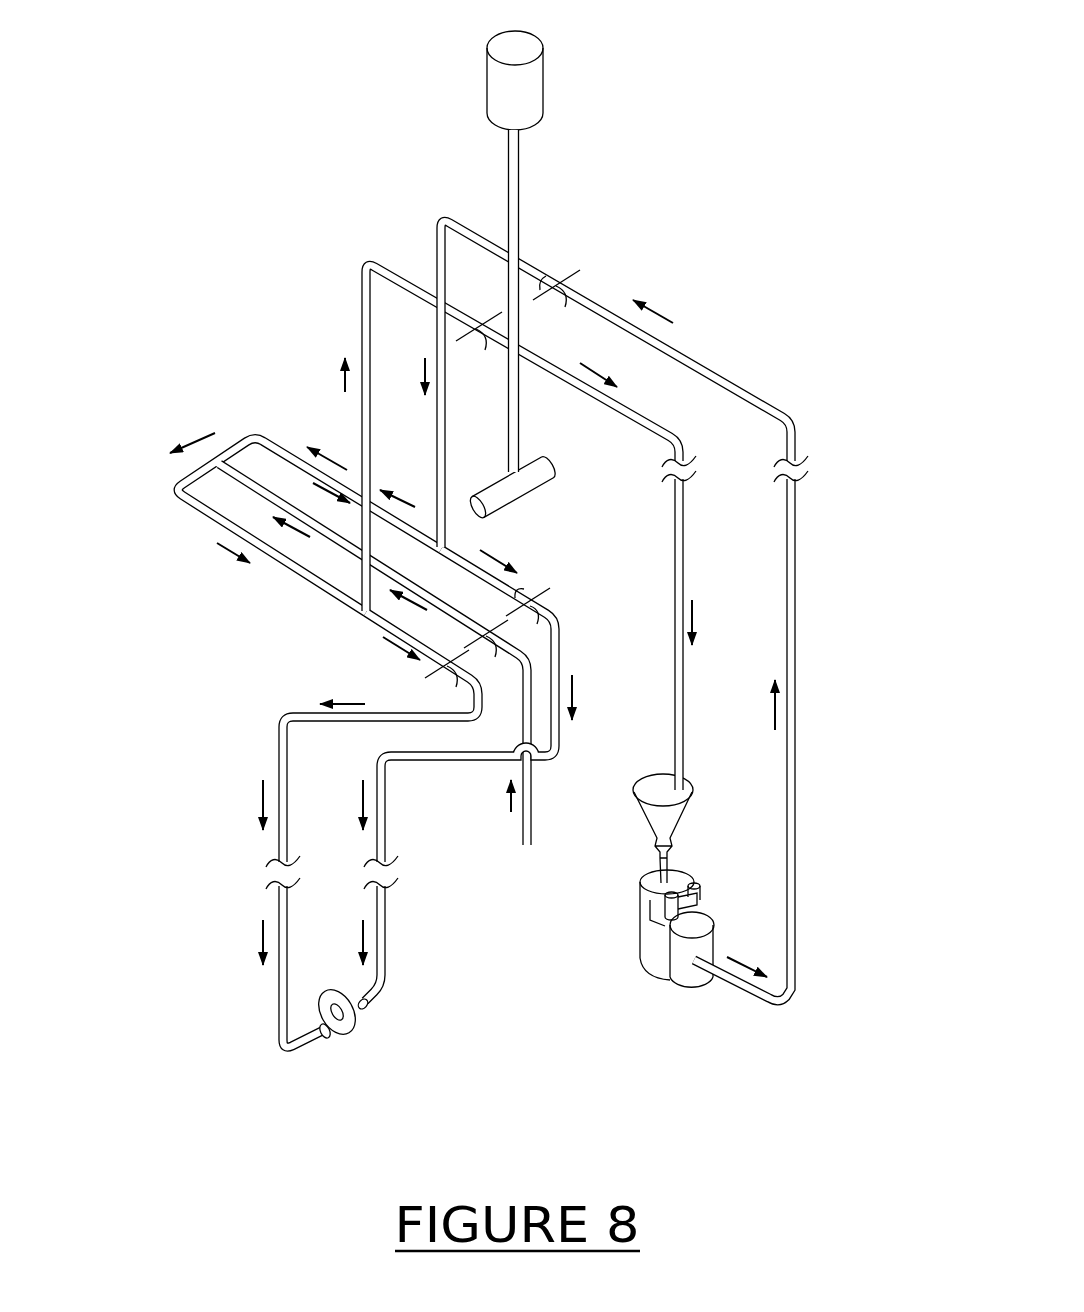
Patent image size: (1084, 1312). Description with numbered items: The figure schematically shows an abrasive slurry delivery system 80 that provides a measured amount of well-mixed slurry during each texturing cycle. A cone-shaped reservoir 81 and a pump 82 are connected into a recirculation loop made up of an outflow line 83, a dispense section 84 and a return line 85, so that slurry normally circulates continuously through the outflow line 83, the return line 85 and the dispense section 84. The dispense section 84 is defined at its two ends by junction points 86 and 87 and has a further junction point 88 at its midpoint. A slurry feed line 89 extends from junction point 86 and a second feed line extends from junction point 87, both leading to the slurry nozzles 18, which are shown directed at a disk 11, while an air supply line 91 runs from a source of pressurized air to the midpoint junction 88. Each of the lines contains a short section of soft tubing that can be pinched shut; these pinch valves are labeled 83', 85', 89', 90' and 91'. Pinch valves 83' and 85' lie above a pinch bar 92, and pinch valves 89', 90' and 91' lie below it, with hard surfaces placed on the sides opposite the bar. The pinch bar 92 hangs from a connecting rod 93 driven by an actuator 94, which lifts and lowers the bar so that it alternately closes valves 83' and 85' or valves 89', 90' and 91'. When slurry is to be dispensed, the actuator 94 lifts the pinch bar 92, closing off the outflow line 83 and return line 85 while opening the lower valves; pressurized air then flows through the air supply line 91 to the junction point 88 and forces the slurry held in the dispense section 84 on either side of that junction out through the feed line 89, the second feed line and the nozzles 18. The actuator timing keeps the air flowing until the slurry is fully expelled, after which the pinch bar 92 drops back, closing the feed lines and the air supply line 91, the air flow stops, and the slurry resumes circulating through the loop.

The slurry delivery system 80 is at (912, 838).
The cone-shaped reservoir 81 is at (640, 812).
The pump 82 is at (657, 977).
The outflow line 83 is at (641, 610).
The pinch valve 83' is at (588, 252).
The dispense section 84 is at (282, 435).
The return line 85 is at (518, 520).
The pinch valve 85' is at (479, 303).
The junction point 86 is at (361, 603).
The junction point 87 is at (446, 606).
The junction point 88 is at (201, 445).
The slurry feed line 89 is at (333, 866).
The pinch valve 89' is at (429, 681).
The pinch valve 90' is at (537, 640).
The air supply line 91 is at (554, 757).
The pinch valve 91' is at (473, 613).
The pinch bar 92 is at (531, 494).
The connecting rod 93 is at (520, 192).
The actuator 94 is at (544, 89).
The slurry nozzle 18 is at (370, 1005).
The workpiece disk 11 is at (355, 1030).